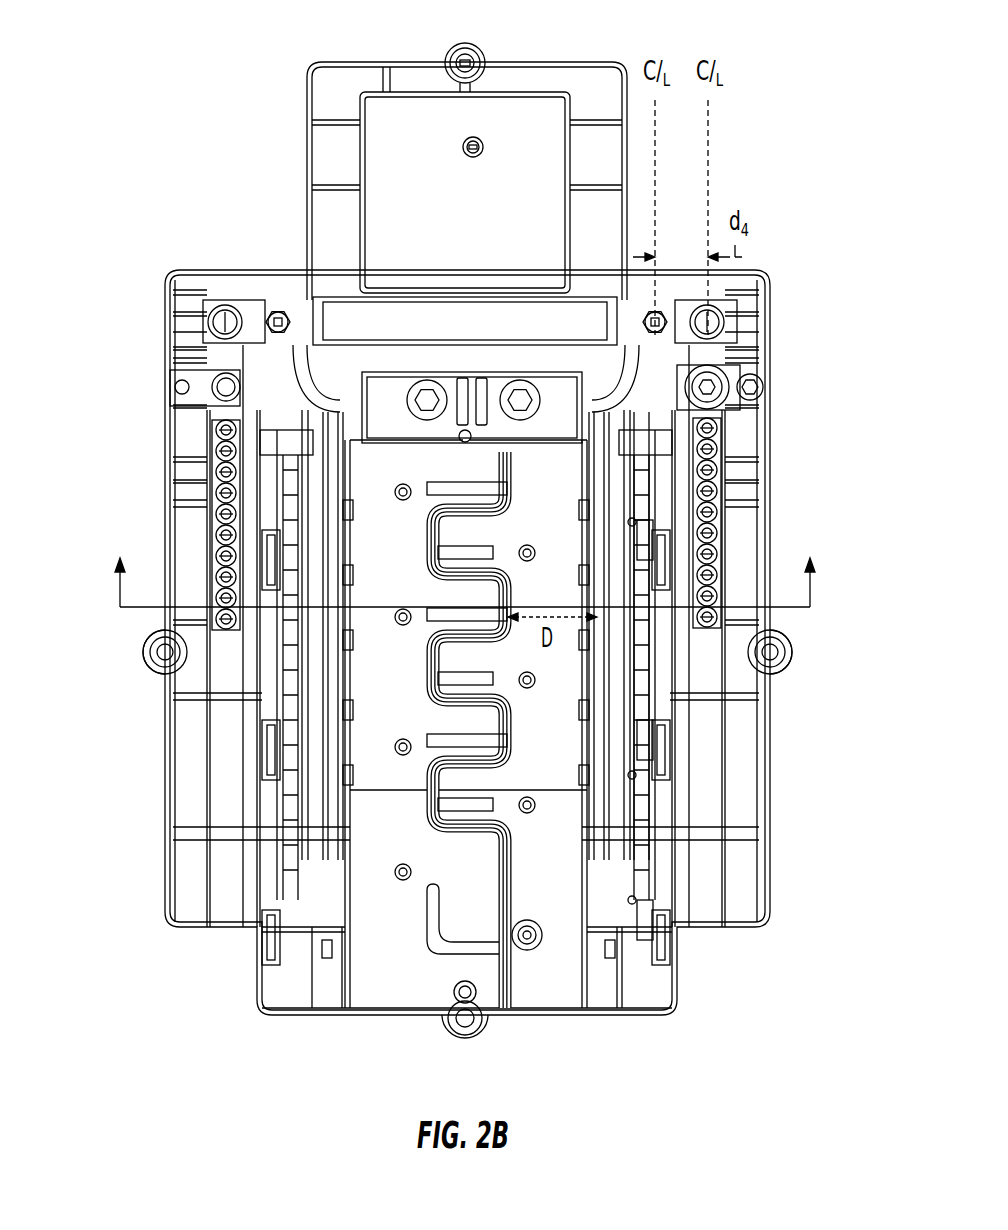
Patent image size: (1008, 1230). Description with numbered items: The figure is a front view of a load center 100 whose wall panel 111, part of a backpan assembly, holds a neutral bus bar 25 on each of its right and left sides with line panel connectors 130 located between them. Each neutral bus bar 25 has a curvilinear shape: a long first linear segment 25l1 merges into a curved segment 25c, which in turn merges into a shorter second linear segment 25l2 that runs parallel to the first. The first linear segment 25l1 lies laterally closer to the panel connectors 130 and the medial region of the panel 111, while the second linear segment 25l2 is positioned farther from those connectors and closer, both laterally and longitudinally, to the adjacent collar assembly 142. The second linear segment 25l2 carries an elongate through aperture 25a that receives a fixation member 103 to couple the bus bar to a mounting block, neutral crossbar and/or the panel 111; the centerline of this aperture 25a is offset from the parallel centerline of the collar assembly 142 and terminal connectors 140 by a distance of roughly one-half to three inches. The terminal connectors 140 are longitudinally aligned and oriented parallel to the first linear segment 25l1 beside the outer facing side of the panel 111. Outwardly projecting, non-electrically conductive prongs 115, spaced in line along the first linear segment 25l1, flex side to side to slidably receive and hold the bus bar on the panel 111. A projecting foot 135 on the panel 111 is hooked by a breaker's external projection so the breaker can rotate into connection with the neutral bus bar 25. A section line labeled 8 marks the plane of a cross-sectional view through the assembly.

The load center 100 is at (250, 88).
The wall panel 111 is at (392, 960).
The neutral bus bar 25 is at (580, 850).
The through aperture 25a is at (622, 322).
The second linear segment 25l2 is at (302, 360).
The first linear segment 25l1 is at (323, 477).
The curved segment 25c is at (238, 340).
The fixation member 103 is at (270, 318).
The non-electrically conductive prongs 115 is at (327, 830).
The panel connectors 130 is at (475, 742).
The projecting foot 135 is at (647, 850).
The terminal connectors 140 is at (217, 537).
The collar assembly 142 is at (762, 398).
The section line 8- 8 is at (465, 570).